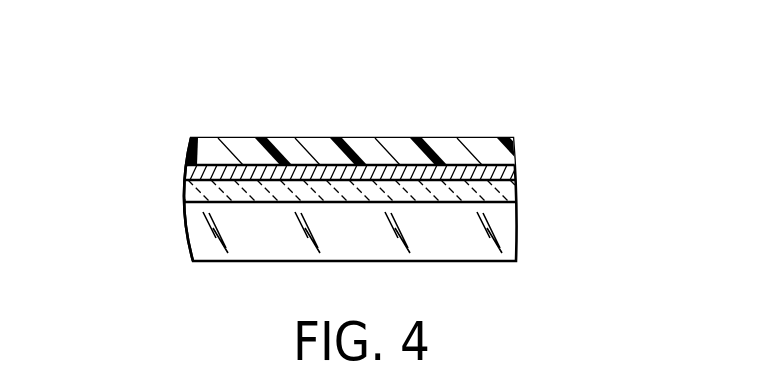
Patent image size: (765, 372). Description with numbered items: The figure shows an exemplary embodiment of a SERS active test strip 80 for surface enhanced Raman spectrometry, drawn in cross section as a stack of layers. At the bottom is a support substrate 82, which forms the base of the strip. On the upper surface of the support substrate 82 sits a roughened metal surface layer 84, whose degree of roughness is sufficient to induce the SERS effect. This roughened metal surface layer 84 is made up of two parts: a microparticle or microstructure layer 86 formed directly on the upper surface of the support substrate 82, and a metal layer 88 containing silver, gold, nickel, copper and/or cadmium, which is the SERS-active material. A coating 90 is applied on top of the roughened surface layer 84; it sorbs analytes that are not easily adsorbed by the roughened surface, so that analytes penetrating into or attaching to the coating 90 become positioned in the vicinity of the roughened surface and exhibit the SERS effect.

The SERS active test strip 80 is at (405, 100).
The support substrate 82 is at (517, 230).
The roughened metal surface layer 84 is at (187, 153).
The microparticle or microstructure layer 86 is at (515, 192).
The metal layer 88 is at (515, 170).
The coating 90 is at (515, 155).